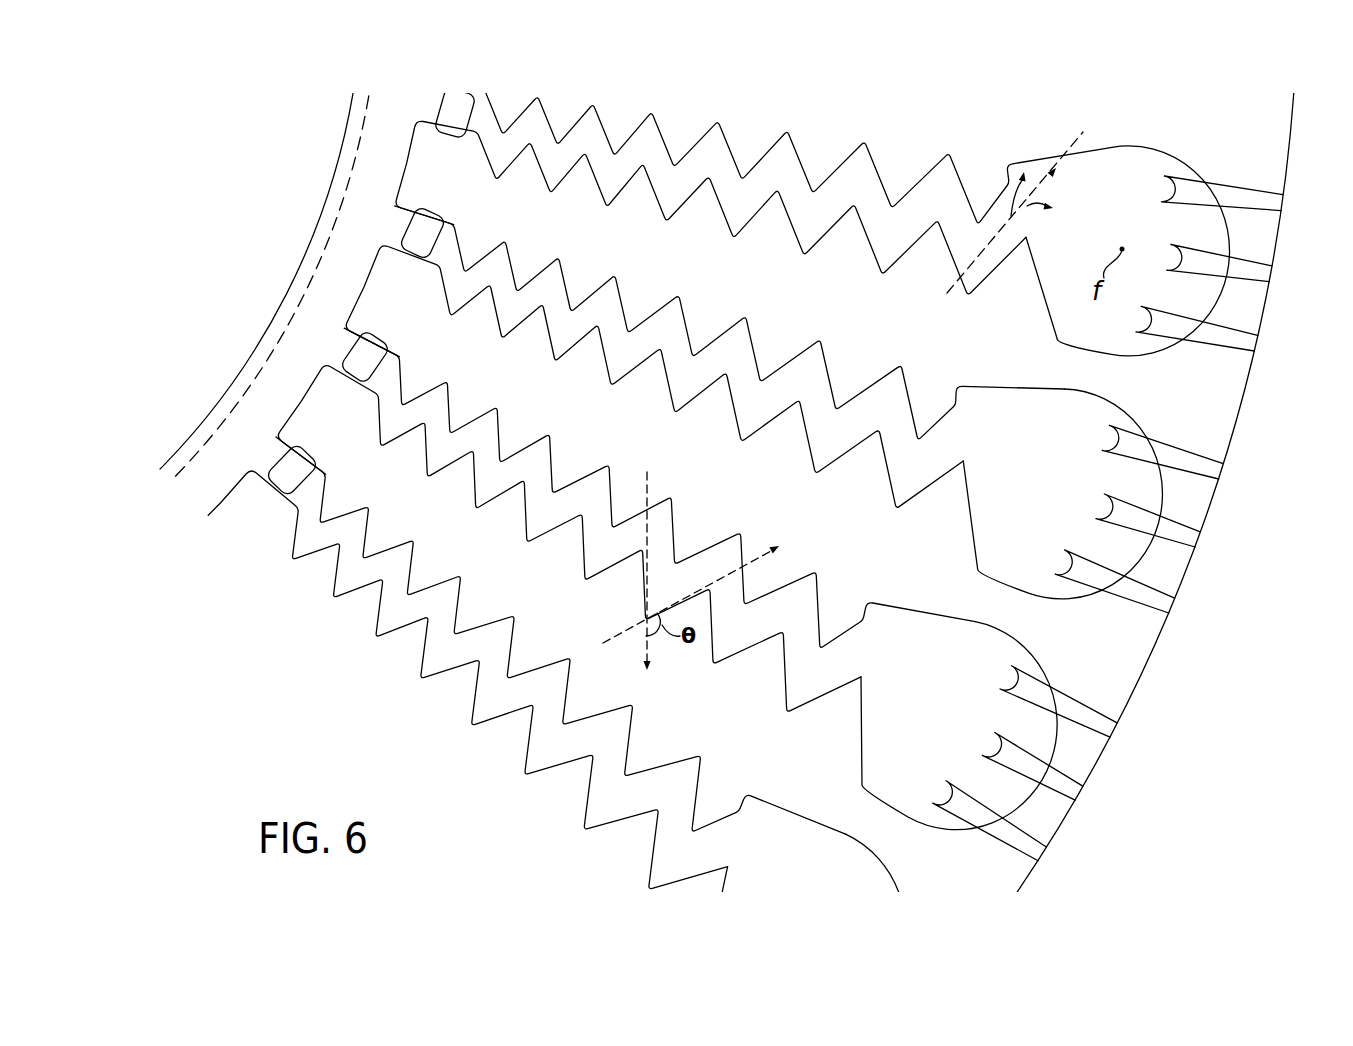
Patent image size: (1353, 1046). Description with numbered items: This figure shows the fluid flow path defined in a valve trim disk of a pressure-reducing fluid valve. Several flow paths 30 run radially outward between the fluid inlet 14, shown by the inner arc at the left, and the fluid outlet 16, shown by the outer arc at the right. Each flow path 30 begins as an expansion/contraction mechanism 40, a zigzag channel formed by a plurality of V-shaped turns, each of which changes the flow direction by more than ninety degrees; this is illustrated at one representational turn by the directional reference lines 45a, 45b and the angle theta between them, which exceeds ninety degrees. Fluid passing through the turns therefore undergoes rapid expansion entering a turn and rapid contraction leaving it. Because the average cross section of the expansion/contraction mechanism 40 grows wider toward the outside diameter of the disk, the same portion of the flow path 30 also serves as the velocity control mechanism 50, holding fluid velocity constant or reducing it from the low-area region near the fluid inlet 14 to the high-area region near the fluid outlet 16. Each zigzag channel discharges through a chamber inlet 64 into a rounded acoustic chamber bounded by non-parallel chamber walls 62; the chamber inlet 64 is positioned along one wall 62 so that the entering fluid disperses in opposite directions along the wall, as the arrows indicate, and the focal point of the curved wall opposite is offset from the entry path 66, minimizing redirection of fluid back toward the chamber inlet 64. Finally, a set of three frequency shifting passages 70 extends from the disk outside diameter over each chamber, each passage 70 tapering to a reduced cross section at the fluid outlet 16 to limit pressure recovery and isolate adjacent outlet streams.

The fluid inlet 14 is at (220, 267).
The fluid outlet 16 is at (1301, 491).
The flow path 30 is at (894, 124).
The expansion/contraction mechanism 40 is at (720, 128).
The velocity control mechanism 50 is at (754, 187).
The chamber wall 62 is at (1166, 149).
The chamber inlet 64 is at (1028, 238).
The path 66 is at (1051, 182).
The frequency shifting passages 70 is at (1245, 273).
The directional reference line 45a is at (651, 482).
The directional reference line 45b is at (757, 549).